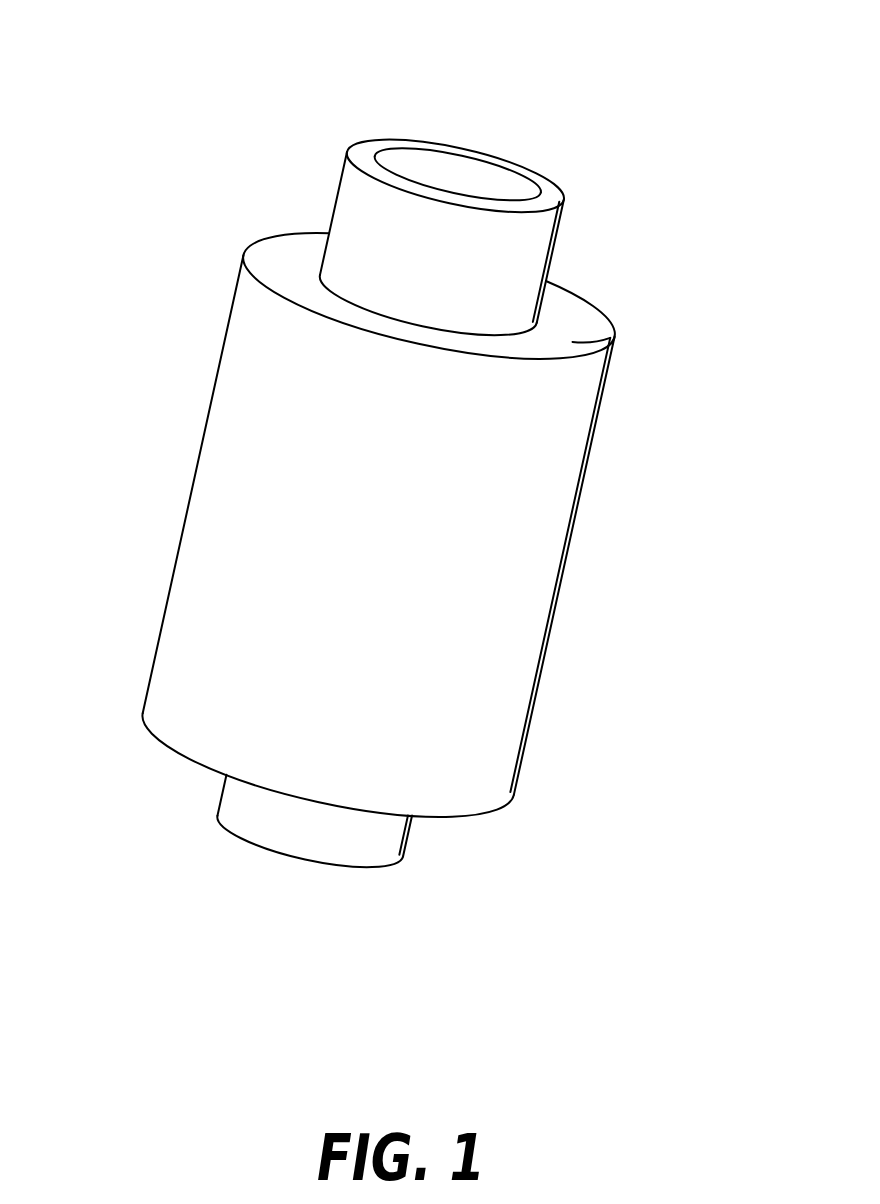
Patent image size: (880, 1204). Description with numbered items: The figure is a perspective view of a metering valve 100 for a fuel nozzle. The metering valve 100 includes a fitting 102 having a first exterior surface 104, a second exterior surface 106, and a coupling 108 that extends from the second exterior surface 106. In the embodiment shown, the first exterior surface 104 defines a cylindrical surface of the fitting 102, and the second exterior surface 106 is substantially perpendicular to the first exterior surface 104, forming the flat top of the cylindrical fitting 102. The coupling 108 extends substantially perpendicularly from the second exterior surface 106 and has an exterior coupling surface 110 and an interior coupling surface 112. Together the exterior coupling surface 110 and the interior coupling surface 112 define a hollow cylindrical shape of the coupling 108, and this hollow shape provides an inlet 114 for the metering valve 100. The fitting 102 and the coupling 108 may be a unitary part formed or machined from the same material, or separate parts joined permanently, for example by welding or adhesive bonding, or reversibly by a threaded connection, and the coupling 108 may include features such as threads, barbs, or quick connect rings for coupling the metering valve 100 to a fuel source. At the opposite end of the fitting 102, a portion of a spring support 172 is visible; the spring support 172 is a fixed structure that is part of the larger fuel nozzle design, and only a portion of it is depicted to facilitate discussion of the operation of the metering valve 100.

The metering valve 100 is at (187, 107).
The fitting 102 is at (600, 427).
The first exterior surface 104 is at (371, 554).
The second exterior surface 106 is at (610, 323).
The coupling 108 is at (565, 218).
The exterior coupling surface 110 is at (443, 263).
The interior coupling surface 112 is at (493, 187).
The inlet 114 is at (437, 178).
The spring support 172 is at (248, 817).